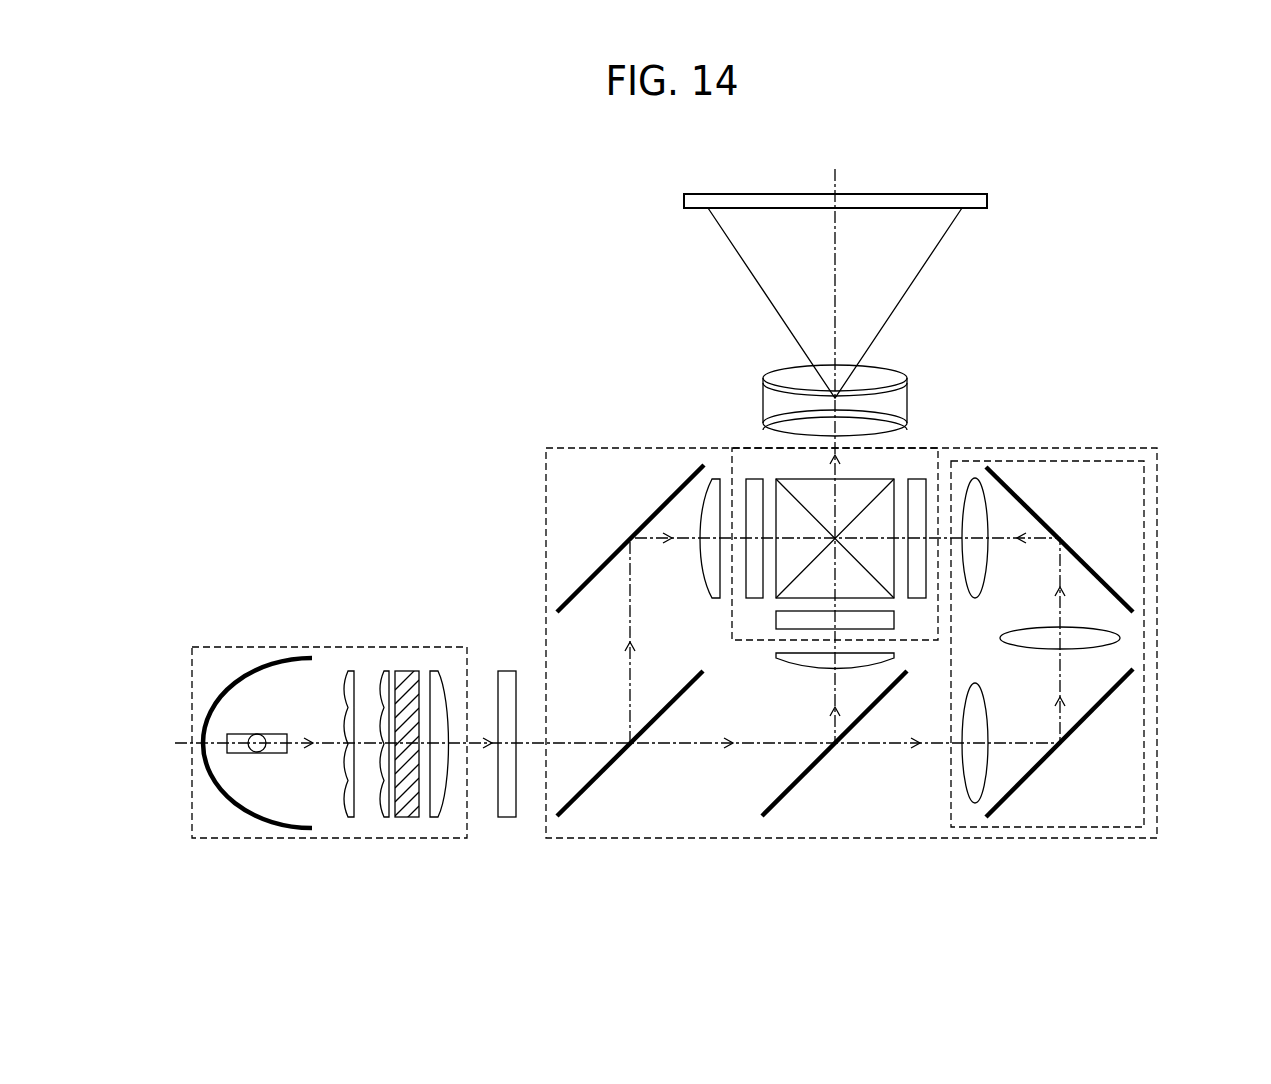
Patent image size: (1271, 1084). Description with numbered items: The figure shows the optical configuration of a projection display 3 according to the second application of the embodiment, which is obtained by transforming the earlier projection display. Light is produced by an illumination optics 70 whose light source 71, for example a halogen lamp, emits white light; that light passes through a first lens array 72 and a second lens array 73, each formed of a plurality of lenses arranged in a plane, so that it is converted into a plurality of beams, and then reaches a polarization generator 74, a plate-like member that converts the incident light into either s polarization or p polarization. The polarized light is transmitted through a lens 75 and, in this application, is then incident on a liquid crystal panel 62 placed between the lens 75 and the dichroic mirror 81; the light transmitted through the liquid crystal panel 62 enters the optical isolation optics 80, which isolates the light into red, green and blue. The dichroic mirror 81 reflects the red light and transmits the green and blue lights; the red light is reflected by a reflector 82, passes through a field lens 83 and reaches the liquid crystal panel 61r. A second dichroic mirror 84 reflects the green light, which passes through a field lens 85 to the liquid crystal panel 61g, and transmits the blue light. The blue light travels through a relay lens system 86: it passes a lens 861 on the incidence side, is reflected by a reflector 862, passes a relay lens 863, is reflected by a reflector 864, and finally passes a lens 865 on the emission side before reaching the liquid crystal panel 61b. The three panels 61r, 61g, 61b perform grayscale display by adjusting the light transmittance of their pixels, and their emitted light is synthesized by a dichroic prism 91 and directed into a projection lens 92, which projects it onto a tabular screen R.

The projection display 3 is at (304, 300).
The illumination optics 70 is at (296, 840).
The light source 71 is at (255, 668).
The first lens array 72 is at (346, 671).
The second lens array 73 is at (382, 671).
The polarization generator 74 is at (410, 818).
The lens 75 is at (437, 671).
The liquid crystal panel 62 is at (502, 671).
The optical isolation optics 80 is at (715, 840).
The dichroic mirror 81 is at (600, 778).
The reflector 82 is at (660, 504).
The field lens 83 is at (702, 584).
The dichroic mirror 84 is at (805, 778).
The field lens 85 is at (787, 660).
The relay lens system 86 is at (1043, 828).
The lens on the incidence side 861 is at (960, 782).
The reflector 862 is at (1027, 780).
The relay lens 863 is at (1030, 648).
The reflector 864 is at (1085, 562).
The lens on the emission side 865 is at (986, 557).
The liquid crystal panel 61r is at (747, 479).
The liquid crystal panel 61g is at (778, 616).
The liquid crystal panel 61b is at (922, 479).
The dichroic prism 91 is at (810, 479).
The projection lens 92 is at (908, 402).
The screen R is at (878, 210).